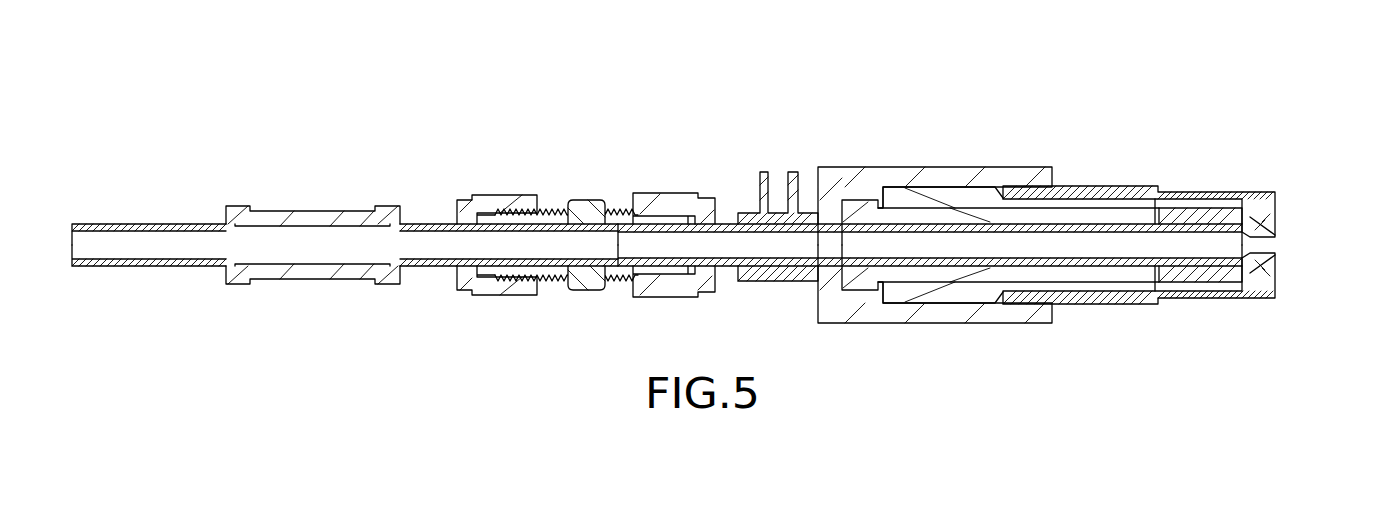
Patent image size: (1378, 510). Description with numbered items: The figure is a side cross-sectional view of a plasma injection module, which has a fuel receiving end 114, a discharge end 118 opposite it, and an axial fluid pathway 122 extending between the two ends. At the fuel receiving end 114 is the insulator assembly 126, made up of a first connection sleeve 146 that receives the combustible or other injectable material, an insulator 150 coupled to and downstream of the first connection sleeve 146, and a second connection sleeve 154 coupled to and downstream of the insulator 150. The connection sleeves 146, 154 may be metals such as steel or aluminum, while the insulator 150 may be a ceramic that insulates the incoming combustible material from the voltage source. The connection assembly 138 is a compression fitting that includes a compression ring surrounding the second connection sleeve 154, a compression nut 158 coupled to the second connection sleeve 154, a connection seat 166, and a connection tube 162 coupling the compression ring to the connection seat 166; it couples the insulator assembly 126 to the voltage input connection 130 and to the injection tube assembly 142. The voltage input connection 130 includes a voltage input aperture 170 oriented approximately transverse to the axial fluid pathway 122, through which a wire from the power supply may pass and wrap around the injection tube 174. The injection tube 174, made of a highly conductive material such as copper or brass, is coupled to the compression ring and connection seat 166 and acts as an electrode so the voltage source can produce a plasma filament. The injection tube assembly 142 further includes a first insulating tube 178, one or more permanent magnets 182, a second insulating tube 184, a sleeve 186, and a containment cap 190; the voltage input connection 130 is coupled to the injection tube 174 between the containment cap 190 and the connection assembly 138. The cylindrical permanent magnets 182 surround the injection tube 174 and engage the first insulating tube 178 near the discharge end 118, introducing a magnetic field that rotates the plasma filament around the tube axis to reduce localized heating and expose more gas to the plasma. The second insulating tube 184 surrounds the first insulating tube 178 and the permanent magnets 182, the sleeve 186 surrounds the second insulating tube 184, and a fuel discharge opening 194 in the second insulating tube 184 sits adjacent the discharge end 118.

The fuel receiving end 114 is at (88, 192).
The discharge end 118 is at (1308, 155).
The axial fluid pathway 122 is at (462, 247).
The insulator assembly 126 is at (442, 147).
The voltage input connection 130 is at (761, 205).
The connection assembly 138 is at (735, 132).
The injection tube assembly 142 is at (1307, 112).
The first connection sleeve 146 is at (183, 223).
The insulator 150 is at (326, 211).
The second connection sleeve 154 is at (432, 222).
The compression nut 158 is at (512, 210).
The connection tube 162 is at (592, 205).
The connection seat 166 is at (657, 205).
The voltage input aperture 170 is at (782, 160).
The injection tube 174 is at (810, 266).
The first insulating tube 178 is at (862, 292).
The permanent magnets 182 is at (1195, 210).
The second insulating tube 184 is at (960, 296).
The sleeve 186 is at (1124, 186).
The containment cap 190 is at (975, 168).
The fuel discharge opening 194 is at (1277, 232).